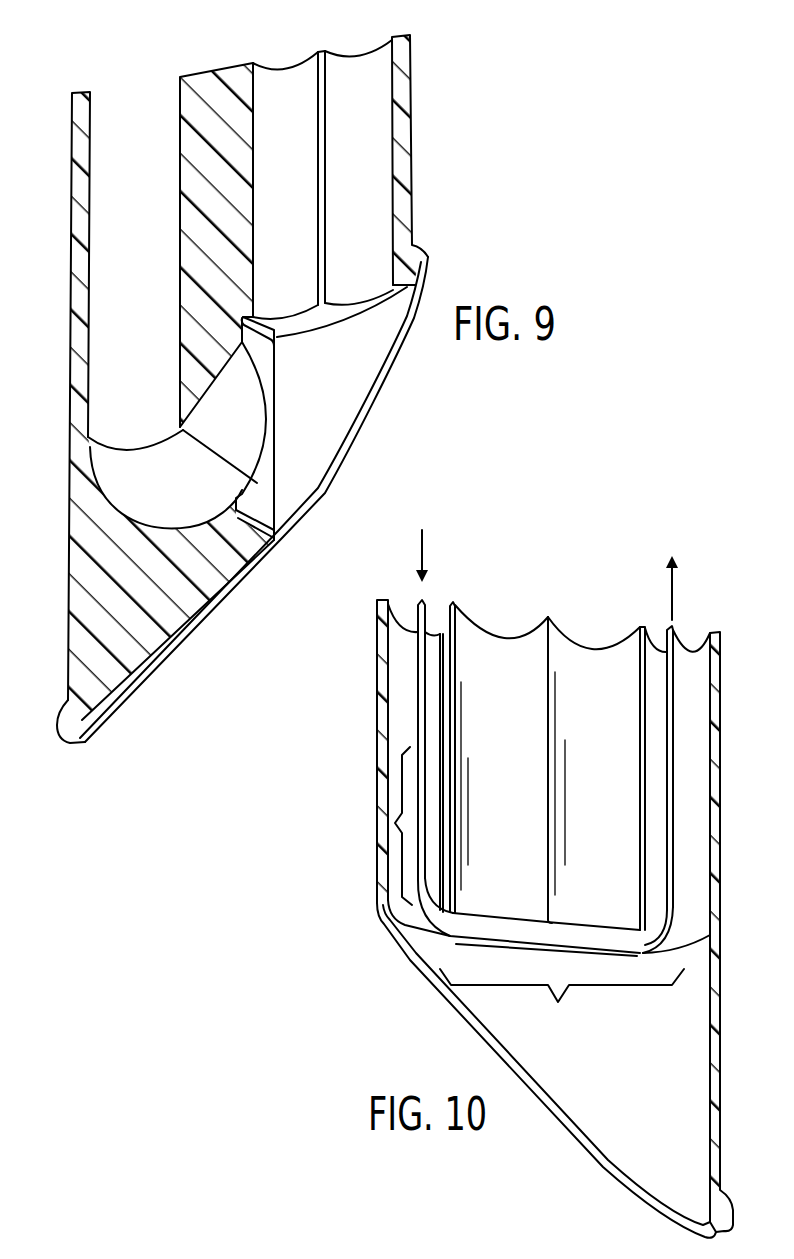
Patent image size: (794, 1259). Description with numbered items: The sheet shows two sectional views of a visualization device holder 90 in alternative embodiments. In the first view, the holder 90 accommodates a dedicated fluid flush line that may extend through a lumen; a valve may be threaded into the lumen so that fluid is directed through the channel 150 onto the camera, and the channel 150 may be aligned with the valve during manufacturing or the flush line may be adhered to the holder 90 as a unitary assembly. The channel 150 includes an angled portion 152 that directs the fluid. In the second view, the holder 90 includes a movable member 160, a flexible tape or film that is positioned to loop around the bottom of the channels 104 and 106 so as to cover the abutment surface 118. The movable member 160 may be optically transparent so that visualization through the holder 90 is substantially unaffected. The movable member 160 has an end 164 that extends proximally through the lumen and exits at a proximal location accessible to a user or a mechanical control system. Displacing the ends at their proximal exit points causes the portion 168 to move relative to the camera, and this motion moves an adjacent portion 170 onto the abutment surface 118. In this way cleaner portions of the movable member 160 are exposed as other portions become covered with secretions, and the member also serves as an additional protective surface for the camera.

In FIG. 9, the holder 90 is at (70, 365).
In FIG. 10, the holder 90 is at (380, 697).
In FIG. 9, the channel 104 is at (288, 115).
In FIG. 10, the channel 104 is at (508, 662).
In FIG. 9, the channel 106 is at (375, 213).
In FIG. 10, the channel 106 is at (578, 668).
In FIG. 10, the abutment surface 118 is at (607, 930).
In FIG. 9, the channel 150 is at (193, 488).
In FIG. 9, the angled portion 152 is at (240, 417).
In FIG. 10, the movable member 160 is at (673, 860).
In FIG. 10, the end 164 is at (420, 620).
In FIG. 10, the portion 168 is at (562, 1001).
In FIG. 10, the adjacent portion 170 is at (395, 822).